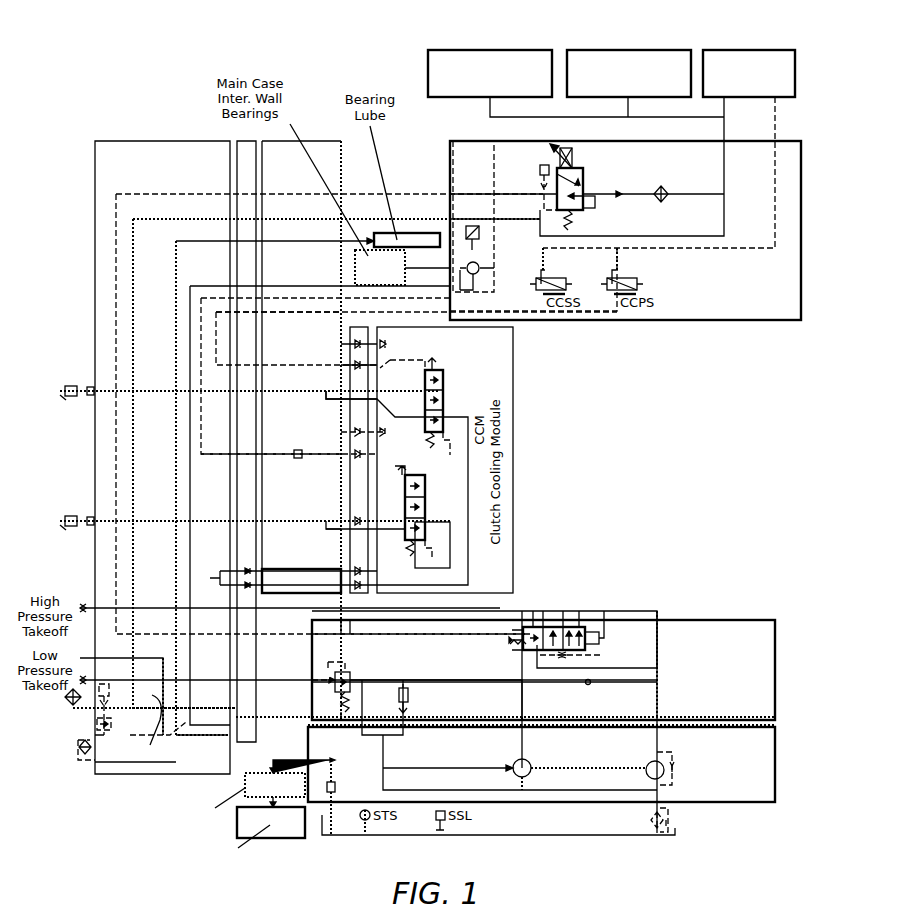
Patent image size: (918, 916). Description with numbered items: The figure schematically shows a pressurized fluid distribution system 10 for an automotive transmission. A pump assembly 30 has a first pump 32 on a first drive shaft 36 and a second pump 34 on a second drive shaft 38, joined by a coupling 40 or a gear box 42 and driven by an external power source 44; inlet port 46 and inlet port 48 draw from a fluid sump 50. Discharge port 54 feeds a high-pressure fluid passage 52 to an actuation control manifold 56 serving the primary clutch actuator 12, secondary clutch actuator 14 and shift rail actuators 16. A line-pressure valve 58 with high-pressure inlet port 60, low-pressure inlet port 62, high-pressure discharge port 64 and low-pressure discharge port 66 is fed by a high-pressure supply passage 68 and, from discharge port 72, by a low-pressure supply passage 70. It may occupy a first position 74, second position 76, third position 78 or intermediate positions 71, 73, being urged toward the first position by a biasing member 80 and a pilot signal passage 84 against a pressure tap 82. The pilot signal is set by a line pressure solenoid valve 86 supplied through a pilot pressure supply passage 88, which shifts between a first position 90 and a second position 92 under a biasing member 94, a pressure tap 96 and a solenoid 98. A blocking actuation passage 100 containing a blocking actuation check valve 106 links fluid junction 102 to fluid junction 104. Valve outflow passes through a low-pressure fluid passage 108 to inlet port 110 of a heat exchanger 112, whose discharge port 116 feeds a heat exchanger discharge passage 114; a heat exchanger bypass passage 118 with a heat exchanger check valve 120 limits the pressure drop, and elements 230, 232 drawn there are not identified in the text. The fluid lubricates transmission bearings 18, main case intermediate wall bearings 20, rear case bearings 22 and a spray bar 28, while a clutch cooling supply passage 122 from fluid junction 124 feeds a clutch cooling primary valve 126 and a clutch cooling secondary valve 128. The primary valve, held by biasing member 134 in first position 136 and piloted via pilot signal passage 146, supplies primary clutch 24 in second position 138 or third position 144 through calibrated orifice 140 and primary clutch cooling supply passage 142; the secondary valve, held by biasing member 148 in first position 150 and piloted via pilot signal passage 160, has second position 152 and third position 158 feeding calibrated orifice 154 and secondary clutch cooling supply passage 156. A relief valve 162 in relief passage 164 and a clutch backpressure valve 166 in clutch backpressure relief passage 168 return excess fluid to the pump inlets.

The pressurized fluid distribution system 10 is at (98, 104).
The primary clutch actuator 12 is at (597, 47).
The secondary clutch actuator 14 is at (466, 47).
The shift rail actuators 16 is at (735, 47).
The transmission bearings 18 is at (408, 232).
The main case intermediate wall bearings 20 is at (355, 268).
The rear case bearings 22 is at (296, 838).
The primary clutch 24 is at (70, 386).
The spray bar 28 is at (258, 772).
The pump assembly 30 is at (722, 802).
The first pump 32 is at (652, 762).
The second pump 34 is at (516, 762).
The first drive shaft 36 is at (612, 790).
The second drive shaft 38 is at (545, 770).
The coupling 40 is at (556, 766).
The gear box 42 is at (556, 770).
The external power source 44 is at (500, 768).
The inlet port 46 is at (660, 780).
The inlet port 48 is at (518, 776).
The fluid sump 50 is at (450, 442).
The high-pressure fluid passage 52 is at (133, 262).
The discharge port 54 is at (658, 752).
The actuation control manifold 56 is at (728, 320).
The line-pressure valve 58 is at (630, 611).
The high-pressure inlet port 60 is at (530, 660).
The low-pressure inlet port 62 is at (515, 648).
The high-pressure discharge port 64 is at (543, 627).
The low-pressure discharge port 66 is at (525, 627).
The high-pressure supply passage 68 is at (657, 655).
The low-pressure supply passage 70 is at (518, 715).
The intermediate position 71 is at (552, 627).
The discharge port 72 is at (516, 762).
The intermediate position 73 is at (583, 627).
The first position 74 is at (500, 634).
The second position 76 is at (565, 627).
The third position 78 is at (592, 632).
The biasing member 80 is at (512, 635).
The pressure tap 82 is at (600, 655).
The pilot signal passage 84 is at (116, 222).
The line pressure solenoid valve 86 is at (586, 172).
The pilot pressure supply passage 88 is at (698, 190).
The first position 90 is at (588, 210).
The second position 92 is at (586, 182).
The biasing member 94 is at (575, 218).
The pressure tap 96 is at (548, 205).
The solenoid 98 is at (568, 148).
The blocking actuation passage 100 is at (640, 682).
The fluid junction 102 is at (520, 681).
The fluid junction 104 is at (672, 666).
The blocking actuation check valve 106 is at (590, 675).
The low-pressure fluid passage 108 is at (500, 608).
The inlet port 110 is at (80, 680).
The heat exchanger 112 is at (66, 700).
The heat exchanger discharge passage 114 is at (80, 708).
The discharge port 116 is at (73, 706).
The heat exchanger bypass passage 118 is at (118, 718).
The heat exchanger check valve 120 is at (162, 694).
The clutch cooling supply passage 122 is at (210, 578).
The fluid junction 124 is at (208, 728).
The clutch cooling primary valve 126 is at (444, 388).
The clutch cooling secondary valve 128 is at (405, 535).
The biasing member 134 is at (433, 438).
The first position 136 is at (446, 430).
The second position 138 is at (425, 395).
The calibrated orifice 140 is at (360, 400).
The primary clutch cooling supply passage 142 is at (160, 390).
The third position 144 is at (430, 368).
The pilot signal passage 146 is at (296, 362).
The biasing member 148 is at (430, 558).
The first position 150 is at (405, 520).
The second position 152 is at (425, 515).
The calibrated orifice 154 is at (341, 529).
The secondary clutch cooling supply passage 156 is at (160, 520).
The third position 158 is at (405, 492).
The pilot signal passage 160 is at (208, 456).
The relief valve 162 is at (413, 700).
The relief passage 164 is at (380, 684).
The clutch backpressure valve 166 is at (343, 672).
The clutch backpressure relief passage 168 is at (330, 672).
The heat exchanger 230 is at (286, 582).
The heat exchanger line 232 is at (322, 575).